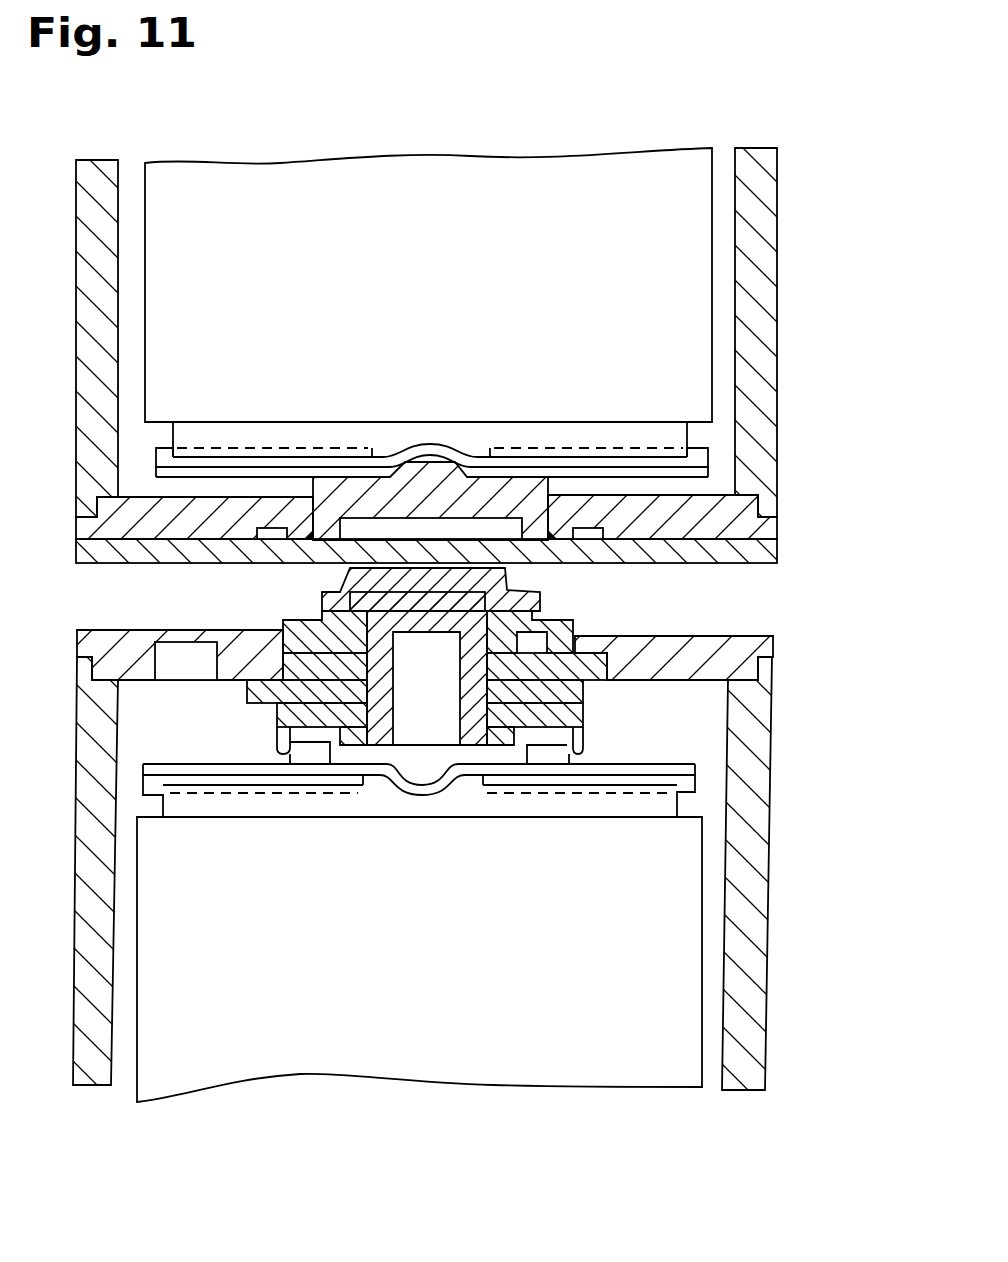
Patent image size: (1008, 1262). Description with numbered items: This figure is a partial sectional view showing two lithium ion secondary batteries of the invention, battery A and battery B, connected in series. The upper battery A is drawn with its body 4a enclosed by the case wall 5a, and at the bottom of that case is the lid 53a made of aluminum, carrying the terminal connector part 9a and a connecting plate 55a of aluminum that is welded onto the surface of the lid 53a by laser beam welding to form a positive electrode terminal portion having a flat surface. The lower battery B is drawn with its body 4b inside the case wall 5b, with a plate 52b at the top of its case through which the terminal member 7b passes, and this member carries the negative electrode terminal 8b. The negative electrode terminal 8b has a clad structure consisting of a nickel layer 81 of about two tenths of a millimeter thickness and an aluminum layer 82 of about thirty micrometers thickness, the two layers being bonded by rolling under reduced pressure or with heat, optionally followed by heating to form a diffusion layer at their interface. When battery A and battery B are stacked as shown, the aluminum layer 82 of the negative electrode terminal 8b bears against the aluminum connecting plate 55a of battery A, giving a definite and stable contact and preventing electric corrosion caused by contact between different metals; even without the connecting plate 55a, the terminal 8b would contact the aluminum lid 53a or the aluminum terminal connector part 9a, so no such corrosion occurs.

The upper block 4a is at (464, 286).
The upper contact member 9a is at (437, 478).
The upper housing wall 5a is at (757, 363).
The battery A is at (790, 284).
The lid 53a is at (773, 527).
The connecting plate 55a is at (773, 552).
The aluminum layer 82 is at (538, 580).
The nickel layer 81 is at (540, 606).
The negative electrode terminal 8b is at (523, 599).
The lower connector pin 7b is at (288, 608).
The lower mounting plate 52b is at (738, 645).
The lower housing wall 5b is at (765, 940).
The battery B is at (798, 866).
The lower block 4b is at (454, 936).